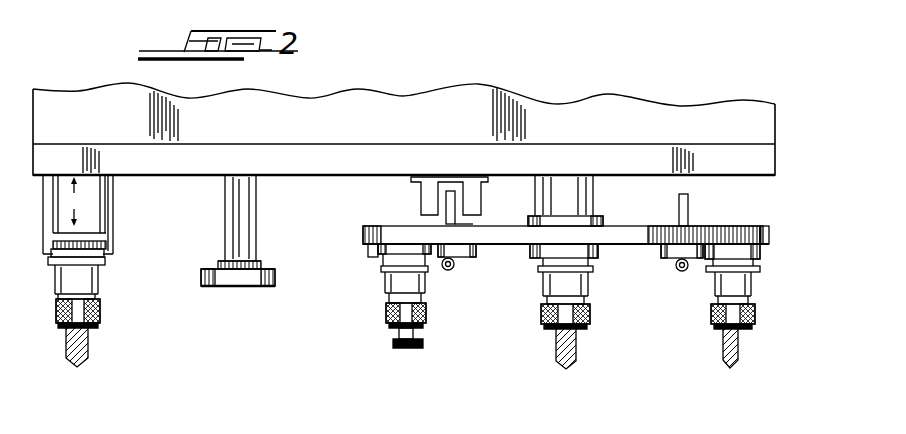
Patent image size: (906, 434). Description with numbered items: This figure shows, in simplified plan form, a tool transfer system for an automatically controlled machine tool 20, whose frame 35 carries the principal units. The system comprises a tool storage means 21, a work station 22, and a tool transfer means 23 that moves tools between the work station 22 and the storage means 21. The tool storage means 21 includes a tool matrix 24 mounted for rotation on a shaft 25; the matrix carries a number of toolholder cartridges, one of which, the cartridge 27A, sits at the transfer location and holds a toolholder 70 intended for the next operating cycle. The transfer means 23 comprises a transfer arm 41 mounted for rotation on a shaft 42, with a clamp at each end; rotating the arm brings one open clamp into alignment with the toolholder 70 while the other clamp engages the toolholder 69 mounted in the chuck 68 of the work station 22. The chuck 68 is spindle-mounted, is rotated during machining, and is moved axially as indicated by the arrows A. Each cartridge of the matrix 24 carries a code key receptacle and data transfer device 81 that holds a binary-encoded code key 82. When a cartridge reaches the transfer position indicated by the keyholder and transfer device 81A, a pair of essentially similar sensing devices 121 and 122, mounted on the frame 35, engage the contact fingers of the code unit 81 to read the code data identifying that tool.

The machine tool 20 is at (394, 110).
The frame 35 is at (628, 152).
The chuck 68 is at (100, 224).
The work station 22 is at (105, 304).
The toolholder 69 is at (97, 314).
The shaft 42 is at (251, 210).
The transfer arm 41 is at (270, 270).
The tool transfer means 23 is at (238, 296).
The sensing device 122 is at (418, 202).
The sensing device 121 is at (464, 194).
The keyholder and transfer device at transfer position 81A is at (468, 225).
The tool matrix 24 is at (722, 239).
The cartridge 27A is at (372, 248).
The toolholder 70 is at (382, 277).
The code key 82 is at (453, 268).
The shaft 25 is at (578, 205).
The tool storage means 21 is at (600, 360).
The code key receptacle and data transfer device 81 is at (687, 205).